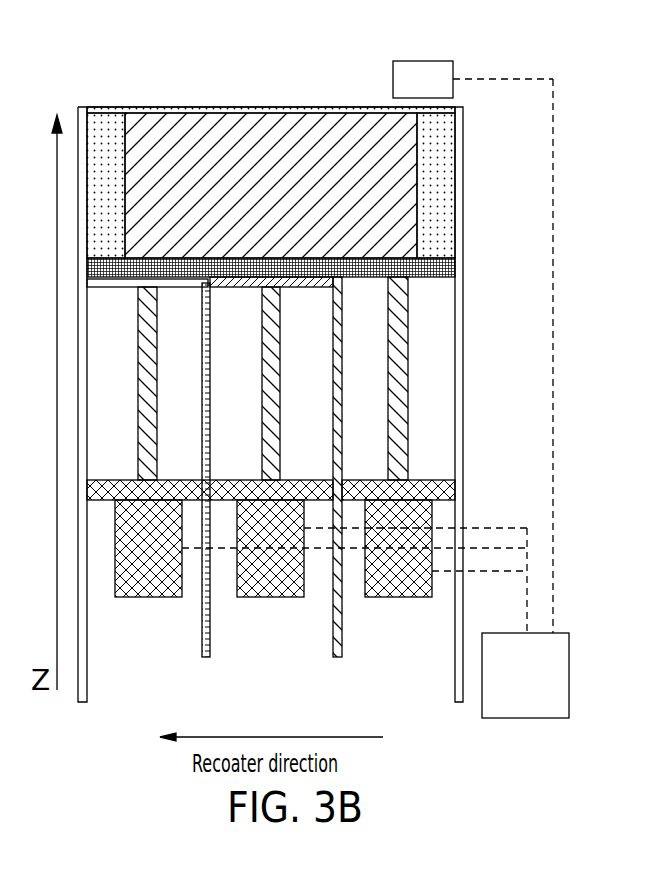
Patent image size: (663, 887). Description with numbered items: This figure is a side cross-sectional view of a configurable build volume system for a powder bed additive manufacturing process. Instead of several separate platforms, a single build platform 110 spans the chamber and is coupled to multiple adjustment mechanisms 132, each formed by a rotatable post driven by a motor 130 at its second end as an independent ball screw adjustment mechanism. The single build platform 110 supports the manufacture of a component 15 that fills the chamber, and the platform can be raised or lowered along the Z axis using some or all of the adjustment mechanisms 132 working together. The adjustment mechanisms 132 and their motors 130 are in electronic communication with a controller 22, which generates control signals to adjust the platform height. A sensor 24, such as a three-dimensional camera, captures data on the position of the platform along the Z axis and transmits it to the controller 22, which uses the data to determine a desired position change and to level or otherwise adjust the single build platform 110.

The component 15 is at (188, 157).
The single build platform 110 is at (255, 257).
The adjustment mechanism 132 is at (420, 378).
The motor 130 is at (382, 588).
The controller 22 is at (537, 690).
The sensor 24 is at (422, 61).